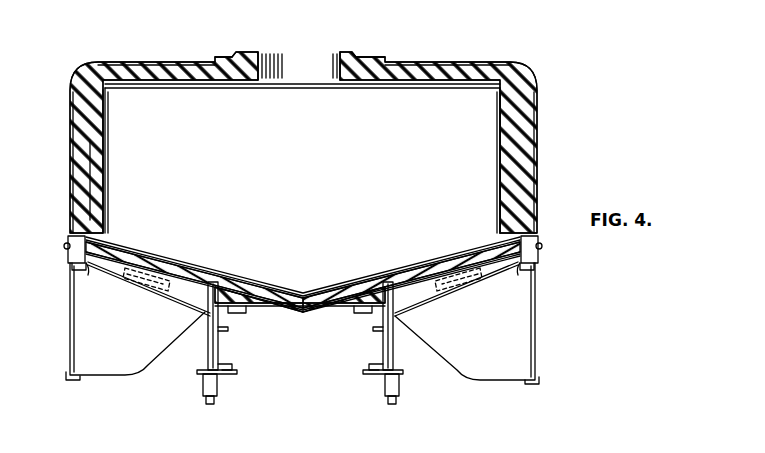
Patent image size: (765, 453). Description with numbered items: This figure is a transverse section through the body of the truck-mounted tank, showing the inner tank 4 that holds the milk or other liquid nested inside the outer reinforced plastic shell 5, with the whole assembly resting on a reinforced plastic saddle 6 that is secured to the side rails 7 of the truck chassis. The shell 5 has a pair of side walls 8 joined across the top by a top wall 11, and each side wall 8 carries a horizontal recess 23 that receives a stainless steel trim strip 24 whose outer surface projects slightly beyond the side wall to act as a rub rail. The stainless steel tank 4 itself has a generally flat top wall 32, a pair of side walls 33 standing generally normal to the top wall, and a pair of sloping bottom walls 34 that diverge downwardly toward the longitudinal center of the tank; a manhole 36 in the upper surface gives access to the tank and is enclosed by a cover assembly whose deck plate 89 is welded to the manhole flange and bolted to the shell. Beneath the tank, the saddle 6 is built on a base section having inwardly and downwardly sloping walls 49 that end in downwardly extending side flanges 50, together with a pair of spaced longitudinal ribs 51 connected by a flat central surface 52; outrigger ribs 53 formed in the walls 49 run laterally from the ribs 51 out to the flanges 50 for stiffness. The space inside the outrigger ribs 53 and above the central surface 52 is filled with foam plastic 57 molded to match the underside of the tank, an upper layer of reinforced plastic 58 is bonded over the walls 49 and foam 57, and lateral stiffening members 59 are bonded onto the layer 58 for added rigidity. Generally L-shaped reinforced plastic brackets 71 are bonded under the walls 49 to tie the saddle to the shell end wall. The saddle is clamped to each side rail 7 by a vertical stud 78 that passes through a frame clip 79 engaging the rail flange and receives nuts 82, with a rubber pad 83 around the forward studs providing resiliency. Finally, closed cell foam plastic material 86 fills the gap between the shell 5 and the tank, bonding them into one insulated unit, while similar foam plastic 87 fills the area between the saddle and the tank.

The inner tank 4 is at (100, 200).
The outer reinforced plastic shell 5 is at (70, 320).
The reinforced plastic saddle 6 is at (432, 288).
The side rail 7 is at (220, 346).
The side wall 8 is at (70, 152).
The top wall 11 is at (448, 62).
The horizontal recess 23 is at (76, 268).
The trim strip 24 is at (66, 252).
The top wall 32 is at (400, 88).
The side wall 33 is at (106, 160).
The sloping bottom wall 34 is at (205, 262).
The manhole 36 is at (346, 54).
The sloping wall 49 is at (170, 292).
The side flange 50 is at (88, 265).
The longitudinally extending rib 51 is at (236, 313).
The central surface 52 is at (300, 306).
The outrigger rib 53 is at (140, 283).
The foam plastic 57 is at (366, 268).
The upper layer of reinforced plastic 58 is at (250, 282).
The stiffening member 59 is at (186, 258).
The L-shaped reinforced plastic bracket 71 is at (152, 292).
The vertical stud 78 is at (208, 346).
The frame clip 79 is at (228, 370).
The nut 82 is at (214, 400).
The rubber pad 83 is at (203, 380).
The foam plastic material 86 is at (108, 100).
The foam plastic 87 is at (328, 272).
The deck plate 89 is at (228, 57).